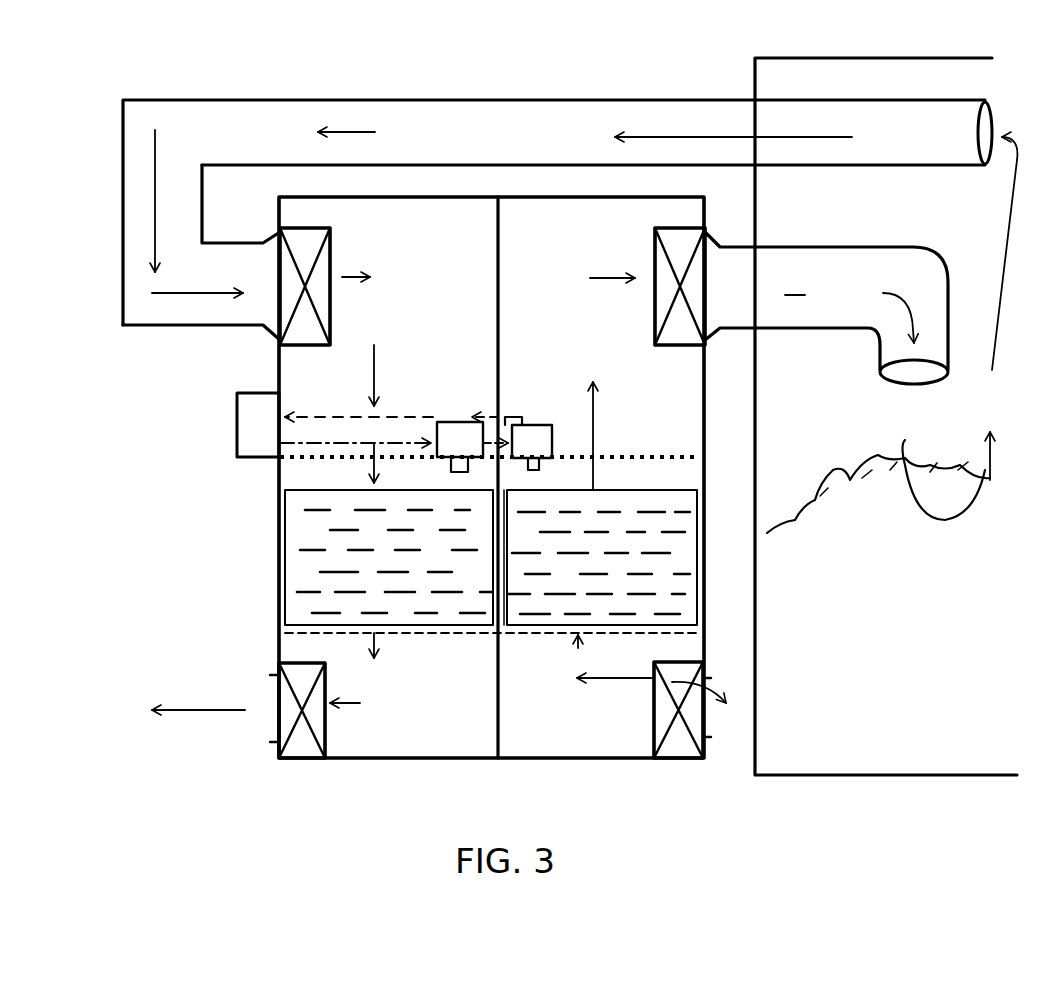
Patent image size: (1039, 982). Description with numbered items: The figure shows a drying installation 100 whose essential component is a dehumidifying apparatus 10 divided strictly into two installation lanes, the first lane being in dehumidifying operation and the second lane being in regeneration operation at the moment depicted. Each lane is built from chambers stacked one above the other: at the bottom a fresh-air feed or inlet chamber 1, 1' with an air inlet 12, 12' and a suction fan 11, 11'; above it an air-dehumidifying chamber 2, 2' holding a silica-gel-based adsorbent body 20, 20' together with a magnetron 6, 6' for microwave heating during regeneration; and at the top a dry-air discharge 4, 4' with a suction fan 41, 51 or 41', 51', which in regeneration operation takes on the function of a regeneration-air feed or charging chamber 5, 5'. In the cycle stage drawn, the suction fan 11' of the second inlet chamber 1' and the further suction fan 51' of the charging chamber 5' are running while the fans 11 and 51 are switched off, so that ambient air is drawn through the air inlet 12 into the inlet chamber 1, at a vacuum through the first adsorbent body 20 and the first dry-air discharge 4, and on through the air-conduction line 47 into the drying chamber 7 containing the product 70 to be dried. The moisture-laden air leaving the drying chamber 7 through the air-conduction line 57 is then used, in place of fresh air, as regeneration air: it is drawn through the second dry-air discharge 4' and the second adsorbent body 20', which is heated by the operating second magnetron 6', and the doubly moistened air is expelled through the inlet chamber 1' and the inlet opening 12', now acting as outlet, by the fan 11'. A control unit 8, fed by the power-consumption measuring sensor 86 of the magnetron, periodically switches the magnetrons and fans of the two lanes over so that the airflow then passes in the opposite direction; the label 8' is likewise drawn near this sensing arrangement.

The drying installation 100 is at (708, 72).
The air-conduction line 57 is at (600, 112).
The air-conduction line 47 is at (830, 258).
The drying chamber 7 is at (817, 742).
The product 70 is at (878, 484).
The dehumidifying apparatus 10 is at (650, 196).
The suction fan 51' is at (326, 305).
The suction fan 41' is at (326, 305).
The suction fan 41 is at (686, 306).
The suction fan 51 is at (686, 306).
The regeneration-air feed or charging chamber 5' is at (408, 326).
The dry-air discharge 4' is at (408, 326).
The dry-air discharge 4 is at (601, 368).
The regeneration-air feed or charging chamber 5 is at (601, 368).
The control unit 8 is at (335, 438).
The sensor 8' is at (490, 425).
The measuring sensor 86 is at (518, 406).
The magnetron 6' is at (458, 426).
The magnetron 6 is at (534, 423).
The air-dehumidifying chamber 2' is at (356, 557).
The air-dehumidifying chamber 2 is at (621, 547).
The adsorbent body 20' is at (348, 568).
The adsorbent body 20 is at (627, 563).
The fresh-air feed or inlet chamber 1' is at (381, 717).
The fresh-air feed or inlet chamber 1 is at (602, 718).
The suction fan 11' is at (271, 716).
The suction fan 11 is at (678, 733).
The air inlet 12' is at (196, 708).
The air inlet 12 is at (702, 741).